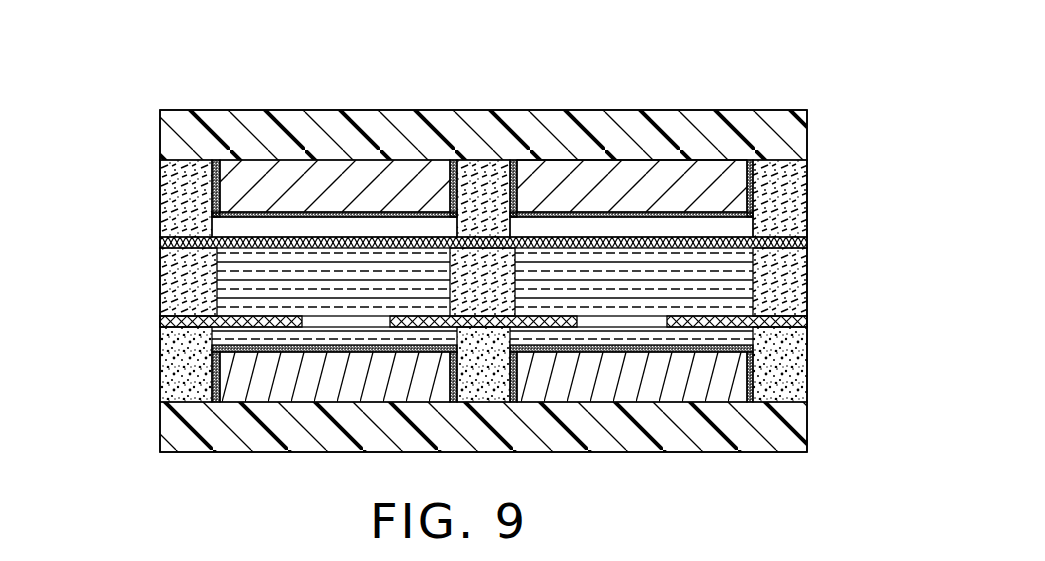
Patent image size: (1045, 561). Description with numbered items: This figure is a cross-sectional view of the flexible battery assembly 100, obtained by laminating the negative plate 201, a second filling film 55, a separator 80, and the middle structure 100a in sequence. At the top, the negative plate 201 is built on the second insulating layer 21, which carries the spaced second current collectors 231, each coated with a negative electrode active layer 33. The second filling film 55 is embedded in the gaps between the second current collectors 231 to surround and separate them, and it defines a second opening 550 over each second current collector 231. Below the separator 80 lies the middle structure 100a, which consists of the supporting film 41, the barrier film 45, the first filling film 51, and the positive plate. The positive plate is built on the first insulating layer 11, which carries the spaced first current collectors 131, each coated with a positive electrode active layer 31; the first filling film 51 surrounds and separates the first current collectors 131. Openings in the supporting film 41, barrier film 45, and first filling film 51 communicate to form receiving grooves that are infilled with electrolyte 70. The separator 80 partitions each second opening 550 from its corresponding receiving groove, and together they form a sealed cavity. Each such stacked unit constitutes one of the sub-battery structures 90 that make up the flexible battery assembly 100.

The flexible battery assembly 100 is at (388, 35).
The middle structure 100a is at (132, 411).
The sub-battery structure 90 is at (288, 100).
The negative plate 201 is at (638, 121).
The second insulating layer 21 is at (687, 142).
The second current collector 231 is at (617, 178).
The negative electrode active layer 33 is at (767, 83).
The second filling film 55 is at (788, 197).
The second opening 550 is at (742, 228).
The separator 80 is at (170, 244).
The electrolyte 70 is at (242, 288).
The supporting film 41 is at (792, 278).
The barrier film 45 is at (798, 320).
The positive electrode active layer 31 is at (213, 375).
The first filling film 51 is at (790, 367).
The first current collector 131 is at (723, 378).
The first insulating layer 11 is at (770, 430).